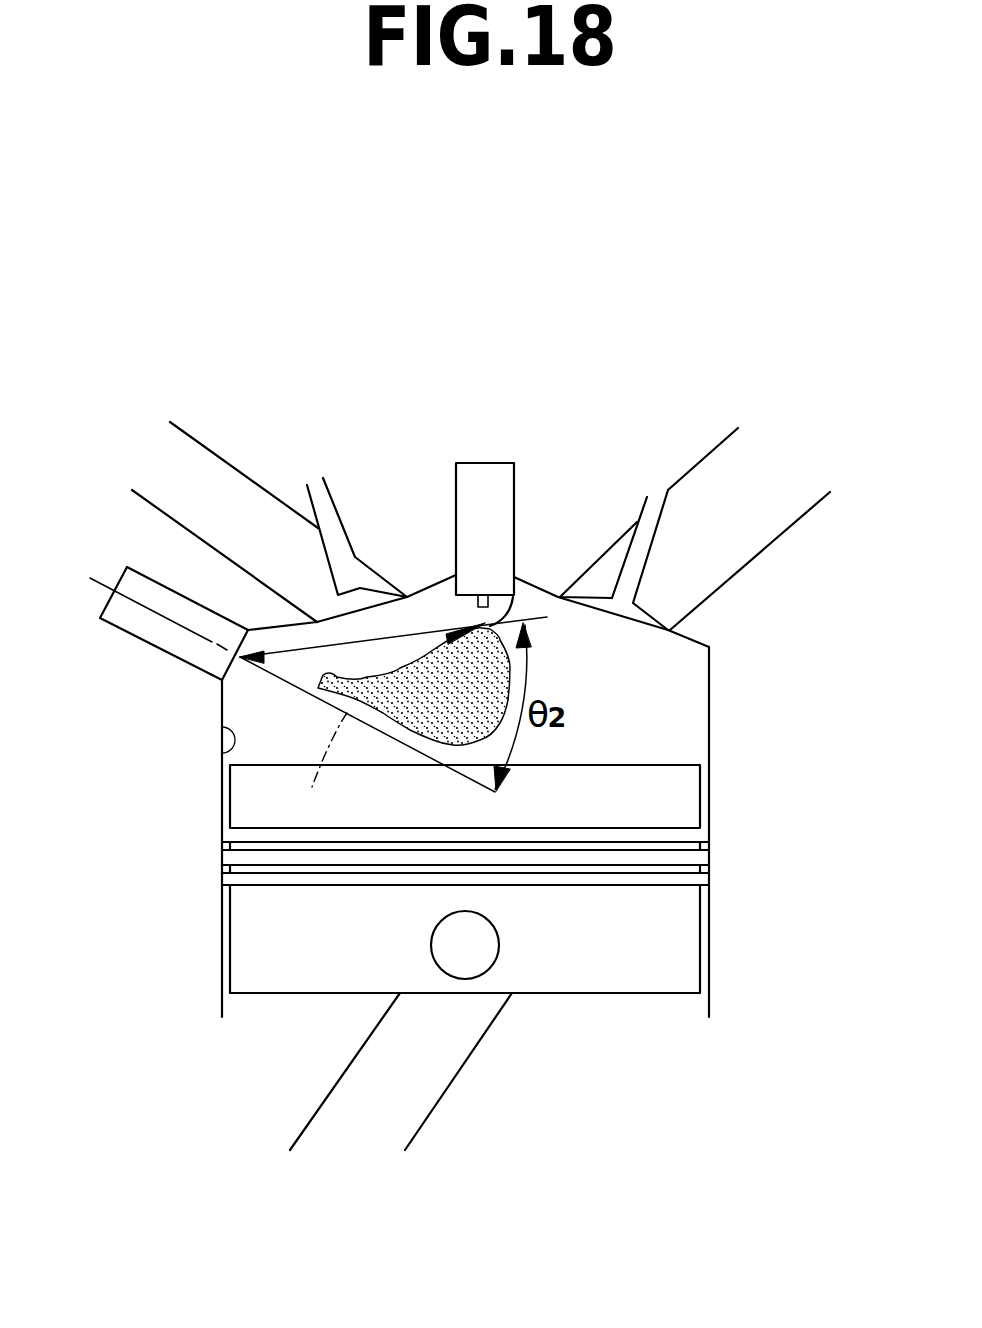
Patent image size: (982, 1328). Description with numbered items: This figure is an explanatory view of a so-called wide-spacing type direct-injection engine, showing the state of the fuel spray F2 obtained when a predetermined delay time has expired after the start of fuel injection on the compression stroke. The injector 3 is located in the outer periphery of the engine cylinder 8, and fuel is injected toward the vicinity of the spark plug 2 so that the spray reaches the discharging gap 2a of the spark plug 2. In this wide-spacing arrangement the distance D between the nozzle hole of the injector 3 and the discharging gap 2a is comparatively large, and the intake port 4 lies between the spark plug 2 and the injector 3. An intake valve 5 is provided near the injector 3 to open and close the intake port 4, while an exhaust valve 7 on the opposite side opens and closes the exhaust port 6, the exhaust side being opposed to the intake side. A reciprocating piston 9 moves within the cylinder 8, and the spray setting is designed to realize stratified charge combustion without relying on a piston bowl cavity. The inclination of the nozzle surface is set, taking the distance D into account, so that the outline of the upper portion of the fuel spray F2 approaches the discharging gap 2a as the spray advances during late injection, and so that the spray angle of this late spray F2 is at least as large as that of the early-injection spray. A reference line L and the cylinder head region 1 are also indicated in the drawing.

The cylinder head 1 is at (668, 730).
The spark plug 2 is at (492, 473).
The discharging gap 2a is at (480, 623).
The injector 3 is at (130, 620).
The intake port 4 is at (233, 487).
The intake valve 5 is at (325, 508).
The exhaust port 6 is at (738, 532).
The exhaust valve 7 is at (640, 620).
The engine cylinder 8 is at (222, 753).
The piston 9 is at (260, 949).
The distance D is at (317, 648).
The reference line L is at (312, 787).
The fuel spray F2 is at (402, 712).